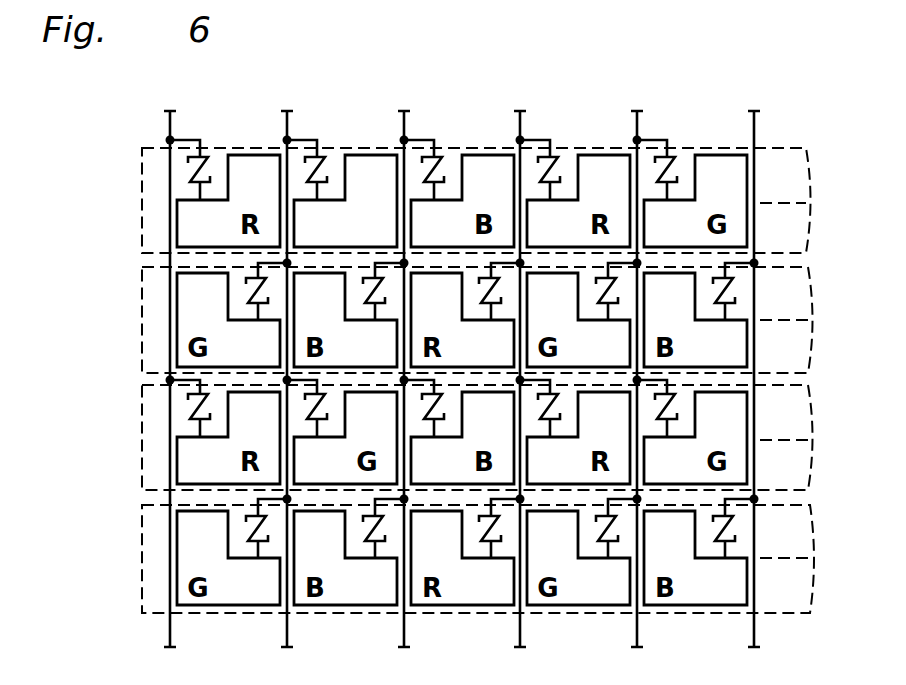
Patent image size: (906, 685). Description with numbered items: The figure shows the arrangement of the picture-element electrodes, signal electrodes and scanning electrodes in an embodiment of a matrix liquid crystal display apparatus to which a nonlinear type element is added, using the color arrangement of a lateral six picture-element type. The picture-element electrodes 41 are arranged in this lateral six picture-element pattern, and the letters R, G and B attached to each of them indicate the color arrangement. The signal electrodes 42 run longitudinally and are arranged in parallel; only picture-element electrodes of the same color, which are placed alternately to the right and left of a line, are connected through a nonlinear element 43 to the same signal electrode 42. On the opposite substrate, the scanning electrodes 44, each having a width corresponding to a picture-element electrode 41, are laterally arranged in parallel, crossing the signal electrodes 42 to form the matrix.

The picture-element electrode 41 is at (385, 192).
The signal electrode 42 is at (288, 127).
The nonlinear element 43 is at (320, 157).
The scanning electrode 44 is at (138, 315).